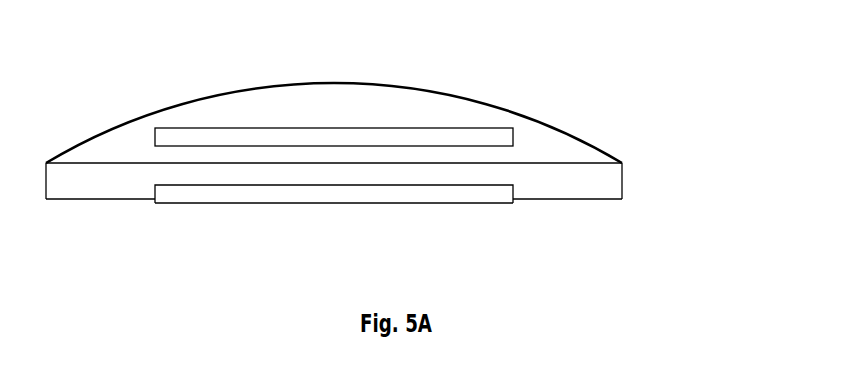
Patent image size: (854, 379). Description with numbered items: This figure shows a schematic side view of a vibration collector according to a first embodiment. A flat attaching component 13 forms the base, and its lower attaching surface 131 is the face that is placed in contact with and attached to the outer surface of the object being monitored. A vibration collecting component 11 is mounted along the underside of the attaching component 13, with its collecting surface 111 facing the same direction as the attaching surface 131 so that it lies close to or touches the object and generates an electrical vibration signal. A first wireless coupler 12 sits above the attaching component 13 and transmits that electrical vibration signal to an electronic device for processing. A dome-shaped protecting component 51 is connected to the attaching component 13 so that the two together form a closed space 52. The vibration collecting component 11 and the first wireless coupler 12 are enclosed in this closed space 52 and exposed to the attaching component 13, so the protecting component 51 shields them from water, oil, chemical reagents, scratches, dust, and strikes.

The protecting component 51 is at (183, 107).
The closed space 52 is at (385, 110).
The first wireless coupler 12 is at (513, 135).
The attaching component 13 is at (622, 181).
The attaching surface 131 is at (95, 199).
The vibration collecting component 11 is at (515, 190).
The collecting surface 111 is at (333, 203).